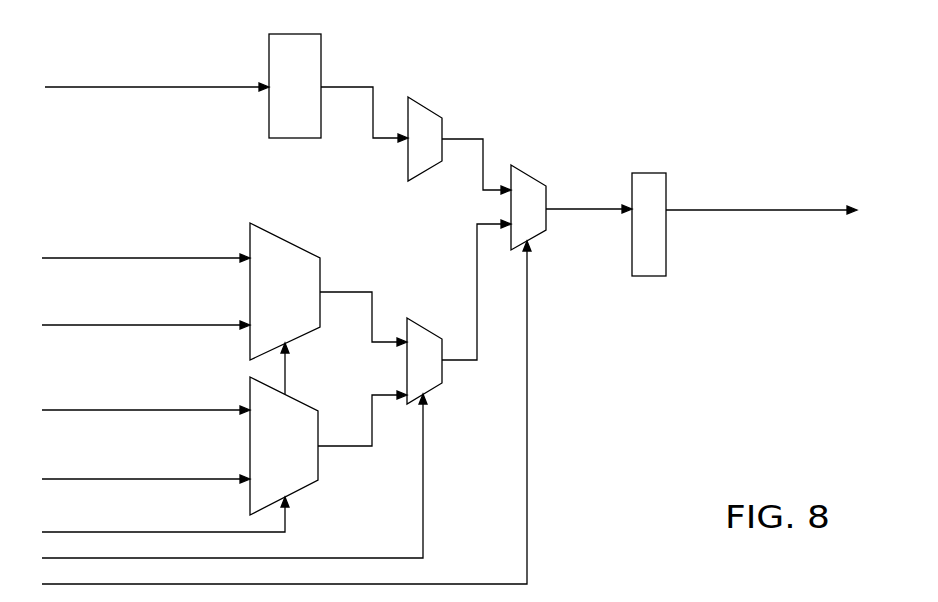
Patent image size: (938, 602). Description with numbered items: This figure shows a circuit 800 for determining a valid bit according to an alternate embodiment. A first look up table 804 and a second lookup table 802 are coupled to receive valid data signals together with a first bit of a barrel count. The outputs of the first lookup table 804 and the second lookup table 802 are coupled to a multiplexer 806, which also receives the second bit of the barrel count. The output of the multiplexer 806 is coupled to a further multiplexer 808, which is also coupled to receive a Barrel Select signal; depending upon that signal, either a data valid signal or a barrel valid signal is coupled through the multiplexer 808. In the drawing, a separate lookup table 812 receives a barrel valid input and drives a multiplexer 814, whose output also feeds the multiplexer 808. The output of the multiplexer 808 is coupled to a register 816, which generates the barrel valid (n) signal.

The barrel valid generation circuit 800 is at (633, 490).
The second lookup table 802 is at (277, 235).
The first look up table 804 is at (293, 397).
The multiplexer 806 is at (423, 327).
The multiplexer 808 is at (527, 172).
The look-up table (LUT) 812 is at (322, 68).
The register 814 is at (435, 112).
The register (REG) 816 is at (651, 172).